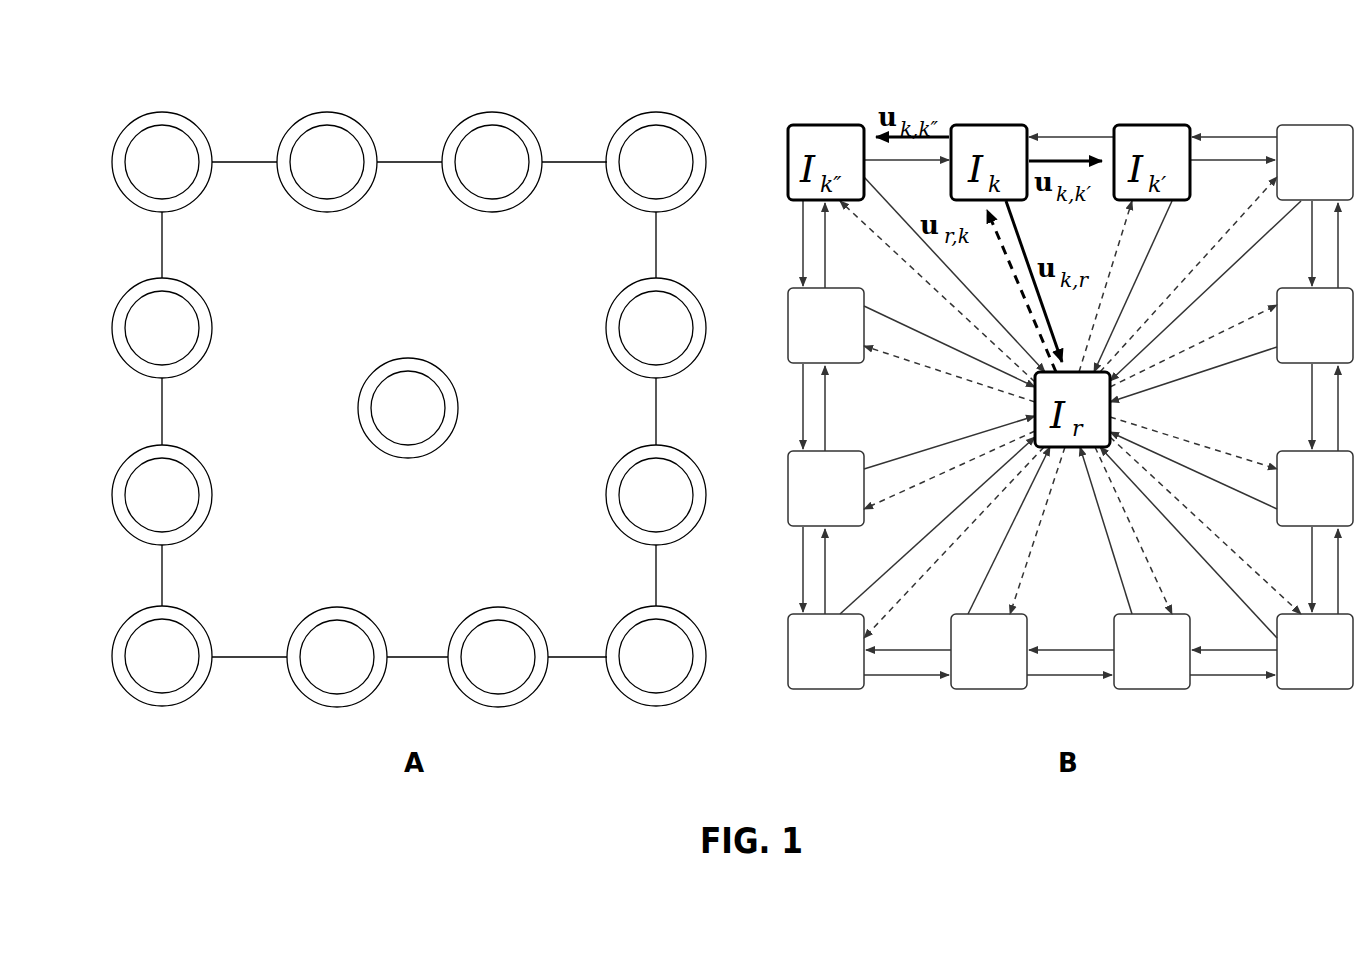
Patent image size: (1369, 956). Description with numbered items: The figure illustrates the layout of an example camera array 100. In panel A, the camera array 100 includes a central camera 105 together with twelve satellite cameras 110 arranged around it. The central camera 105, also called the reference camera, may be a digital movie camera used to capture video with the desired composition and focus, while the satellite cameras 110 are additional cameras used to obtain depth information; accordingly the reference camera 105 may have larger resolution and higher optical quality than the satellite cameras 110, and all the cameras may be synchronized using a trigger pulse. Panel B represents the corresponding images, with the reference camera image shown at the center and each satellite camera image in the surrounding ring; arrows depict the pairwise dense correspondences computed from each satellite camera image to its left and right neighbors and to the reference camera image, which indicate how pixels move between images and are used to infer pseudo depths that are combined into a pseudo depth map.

The camera array 100 is at (527, 85).
The satellite cameras 110 is at (327, 112).
The central camera 105 is at (407, 358).